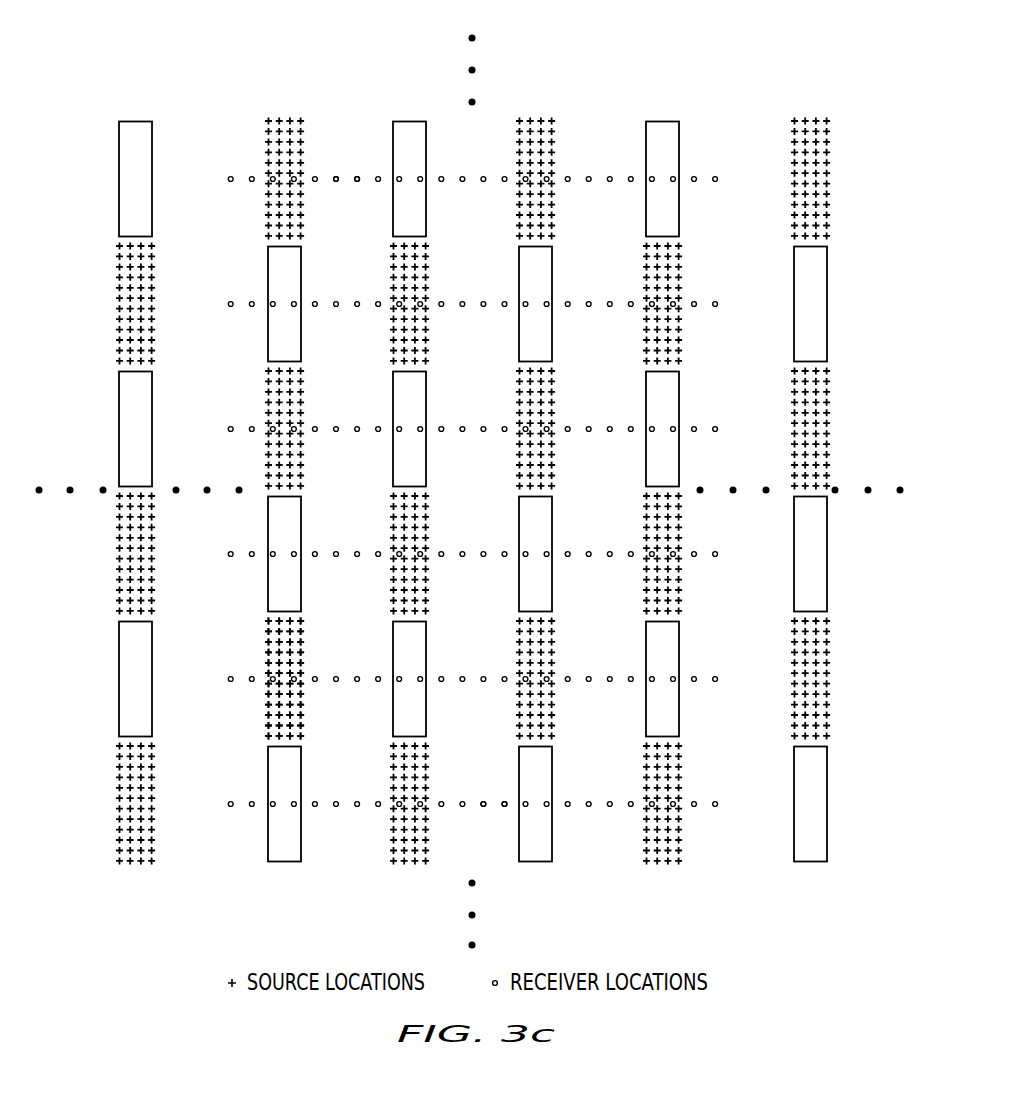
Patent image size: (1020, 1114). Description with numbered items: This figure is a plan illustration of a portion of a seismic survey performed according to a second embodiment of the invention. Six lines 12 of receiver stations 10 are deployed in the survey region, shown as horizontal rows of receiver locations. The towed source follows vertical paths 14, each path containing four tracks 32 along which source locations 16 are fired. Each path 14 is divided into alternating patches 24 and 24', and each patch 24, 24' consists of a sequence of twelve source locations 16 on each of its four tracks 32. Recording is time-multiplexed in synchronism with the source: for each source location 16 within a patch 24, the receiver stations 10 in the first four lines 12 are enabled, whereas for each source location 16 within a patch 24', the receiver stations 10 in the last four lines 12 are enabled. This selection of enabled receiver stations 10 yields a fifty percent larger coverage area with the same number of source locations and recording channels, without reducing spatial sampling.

The receiver station 10 is at (357, 174).
The line of receiver stations 12 is at (720, 179).
The path 14 is at (687, 114).
The source location 16 is at (262, 718).
The patch 24 is at (371, 617).
The patch 24' is at (370, 492).
The track 32 is at (289, 114).